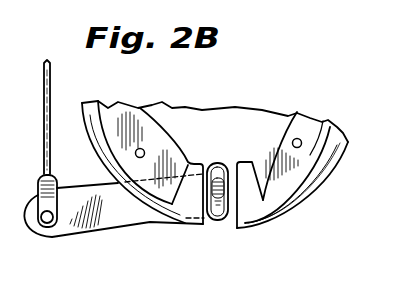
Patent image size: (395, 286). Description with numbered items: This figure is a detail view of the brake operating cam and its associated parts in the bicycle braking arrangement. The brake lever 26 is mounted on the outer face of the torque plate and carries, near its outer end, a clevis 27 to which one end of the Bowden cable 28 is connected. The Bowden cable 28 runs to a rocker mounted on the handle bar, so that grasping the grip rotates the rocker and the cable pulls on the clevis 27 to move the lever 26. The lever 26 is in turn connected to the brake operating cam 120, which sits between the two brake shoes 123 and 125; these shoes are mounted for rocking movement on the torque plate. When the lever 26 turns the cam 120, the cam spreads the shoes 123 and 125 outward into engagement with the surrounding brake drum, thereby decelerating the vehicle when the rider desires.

The lever 26 is at (94, 221).
The clevis 27 is at (52, 175).
The Bowden cable 28 is at (50, 108).
The brake operating cam 120 is at (215, 172).
The brake shoe 123 is at (124, 126).
The brake shoe 125 is at (323, 121).